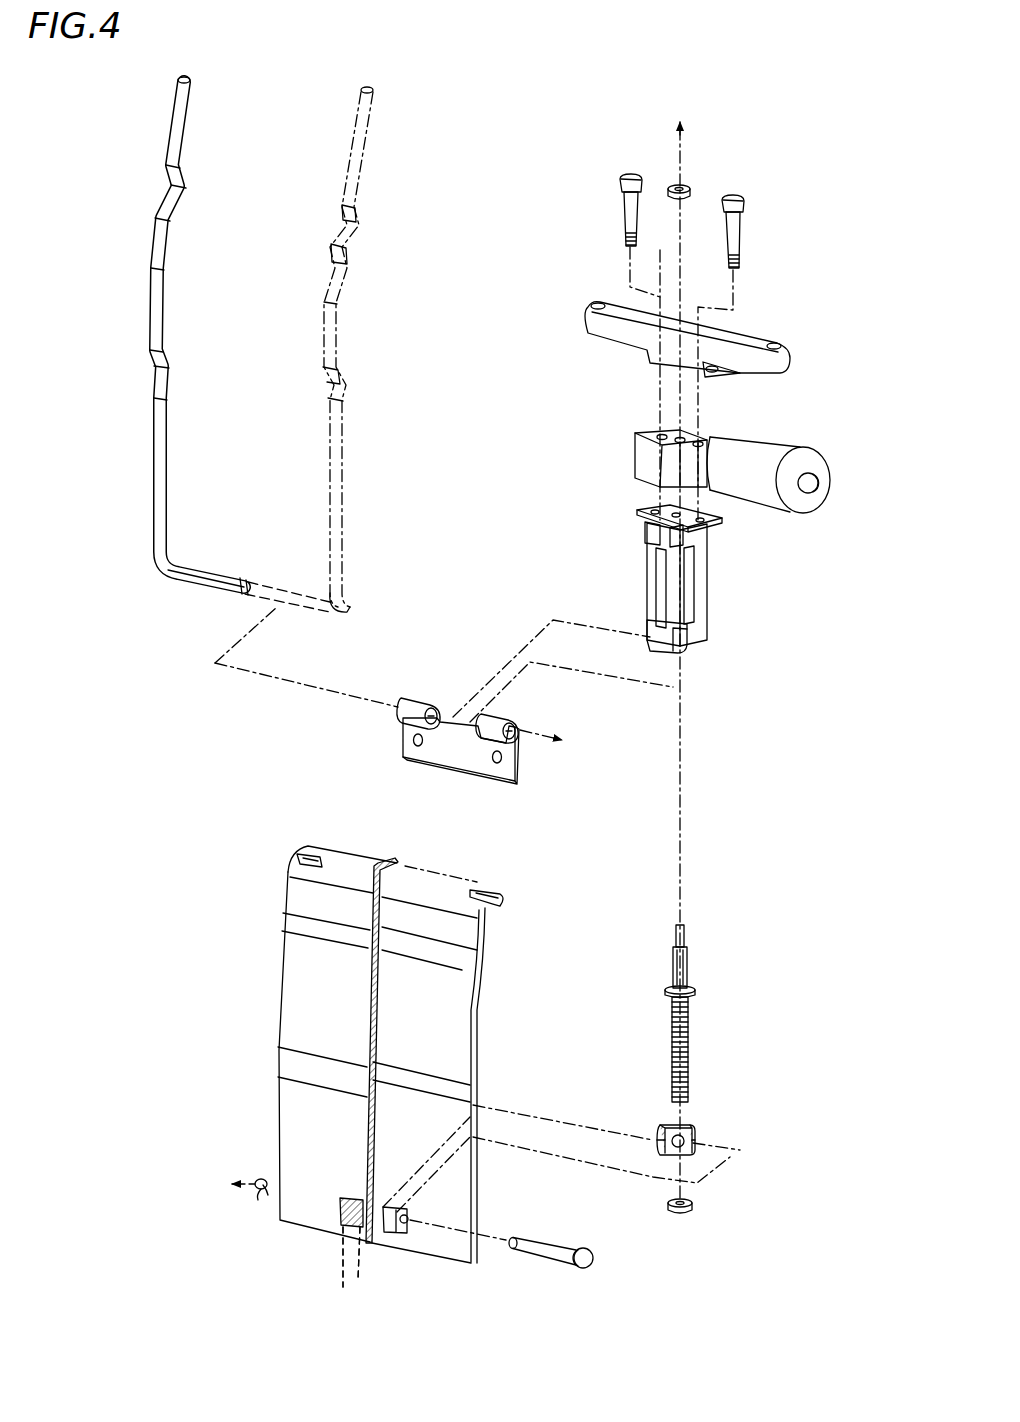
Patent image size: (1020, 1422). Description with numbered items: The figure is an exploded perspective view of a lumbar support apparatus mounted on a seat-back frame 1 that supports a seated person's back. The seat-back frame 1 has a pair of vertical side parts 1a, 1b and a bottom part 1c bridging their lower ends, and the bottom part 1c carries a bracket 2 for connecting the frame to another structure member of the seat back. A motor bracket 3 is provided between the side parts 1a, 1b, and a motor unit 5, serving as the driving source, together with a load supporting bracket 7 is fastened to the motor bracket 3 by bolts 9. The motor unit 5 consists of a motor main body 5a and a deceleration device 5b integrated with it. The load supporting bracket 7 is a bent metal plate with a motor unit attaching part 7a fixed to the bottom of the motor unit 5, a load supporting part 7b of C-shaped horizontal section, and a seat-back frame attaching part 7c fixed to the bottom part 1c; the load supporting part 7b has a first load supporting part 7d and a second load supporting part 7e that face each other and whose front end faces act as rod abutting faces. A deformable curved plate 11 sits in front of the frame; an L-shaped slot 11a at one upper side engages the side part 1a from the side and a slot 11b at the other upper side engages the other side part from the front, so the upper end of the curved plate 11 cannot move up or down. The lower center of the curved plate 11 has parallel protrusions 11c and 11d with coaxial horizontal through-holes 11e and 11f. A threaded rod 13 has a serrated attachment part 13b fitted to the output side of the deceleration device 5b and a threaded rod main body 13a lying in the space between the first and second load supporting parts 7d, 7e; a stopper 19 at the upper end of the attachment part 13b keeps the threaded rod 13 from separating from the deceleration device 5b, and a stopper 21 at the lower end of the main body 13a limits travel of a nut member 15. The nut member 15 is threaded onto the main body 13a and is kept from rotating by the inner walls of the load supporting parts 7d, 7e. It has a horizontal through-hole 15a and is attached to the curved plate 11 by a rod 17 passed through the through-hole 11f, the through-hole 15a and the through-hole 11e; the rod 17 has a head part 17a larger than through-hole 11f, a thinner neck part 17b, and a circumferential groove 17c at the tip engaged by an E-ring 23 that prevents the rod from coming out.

The seat-back frame 1 is at (376, 162).
The side part 1a is at (152, 248).
The side part 1b is at (343, 346).
The bottom part 1c is at (190, 583).
The bracket 2 is at (481, 763).
The motor bracket 3 is at (783, 344).
The motor unit 5 is at (819, 387).
The motor main body 5a is at (757, 445).
The deceleration device 5b is at (700, 430).
The load supporting bracket 7 is at (783, 527).
The motor unit attaching part 7a is at (720, 523).
The load supporting part 7b is at (708, 548).
The seat-back frame attaching part 7c is at (690, 652).
The first load supporting part 7d is at (660, 575).
The second load supporting part 7e is at (688, 607).
The bolts 9 is at (620, 215).
The curved plate 11 is at (278, 953).
The L-shaped slot 11a is at (300, 856).
The slot 11b is at (488, 888).
The protrusion 11c is at (344, 1270).
The protrusion 11d is at (402, 1234).
The through-hole 11e is at (358, 1238).
The through-hole 11f is at (410, 1224).
The threaded rod 13 is at (756, 940).
The threaded rod main body 13a is at (688, 1018).
The attachment part 13b is at (687, 963).
The nut member 15 is at (690, 1130).
The horizontal through-hole 15a is at (684, 1141).
The rod 17 is at (636, 1212).
The head part 17a is at (590, 1267).
The neck part 17b is at (560, 1254).
The circumferential groove 17c is at (527, 1238).
The stopper 19 is at (690, 190).
The stopper 21 is at (692, 1208).
The E-ring 23 is at (260, 1178).